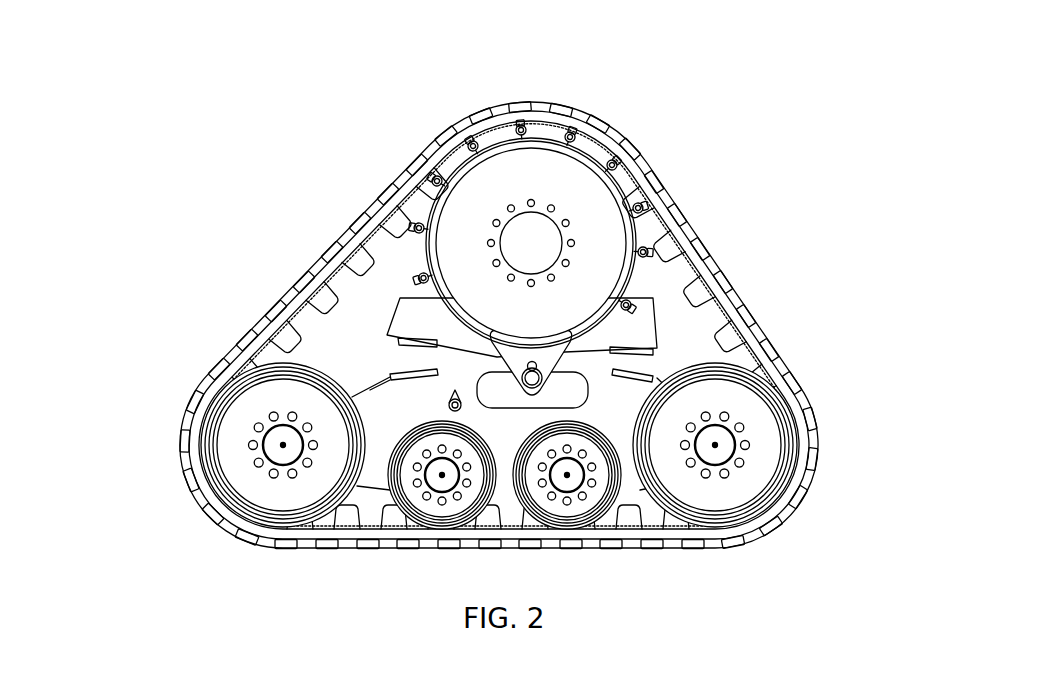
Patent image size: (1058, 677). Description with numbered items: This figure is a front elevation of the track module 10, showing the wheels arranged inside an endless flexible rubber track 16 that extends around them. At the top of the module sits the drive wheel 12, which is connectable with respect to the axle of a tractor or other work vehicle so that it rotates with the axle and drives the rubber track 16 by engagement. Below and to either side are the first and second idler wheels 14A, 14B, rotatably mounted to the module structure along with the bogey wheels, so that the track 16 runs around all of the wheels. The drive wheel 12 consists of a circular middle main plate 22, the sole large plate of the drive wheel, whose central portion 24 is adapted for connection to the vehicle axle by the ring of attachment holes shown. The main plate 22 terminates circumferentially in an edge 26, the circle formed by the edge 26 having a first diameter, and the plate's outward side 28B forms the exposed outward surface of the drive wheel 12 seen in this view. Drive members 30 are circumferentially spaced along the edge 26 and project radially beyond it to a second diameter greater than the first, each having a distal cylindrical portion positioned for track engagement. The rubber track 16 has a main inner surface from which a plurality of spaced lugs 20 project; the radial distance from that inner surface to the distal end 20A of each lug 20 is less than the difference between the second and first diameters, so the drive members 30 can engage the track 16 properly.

The track module 10 is at (485, 308).
The drive wheel 12 is at (427, 257).
The first idler wheel 14A is at (232, 457).
The second idler wheel 14B is at (748, 403).
The endless flexible rubber track 16 is at (815, 457).
The lugs 20 is at (308, 322).
The distal end of track lug 20A is at (675, 275).
The circular middle main plate 22 is at (558, 173).
The central portion 24 is at (560, 215).
The edge 26 is at (427, 263).
The outward side 28B is at (487, 183).
The drive members 30 is at (649, 250).